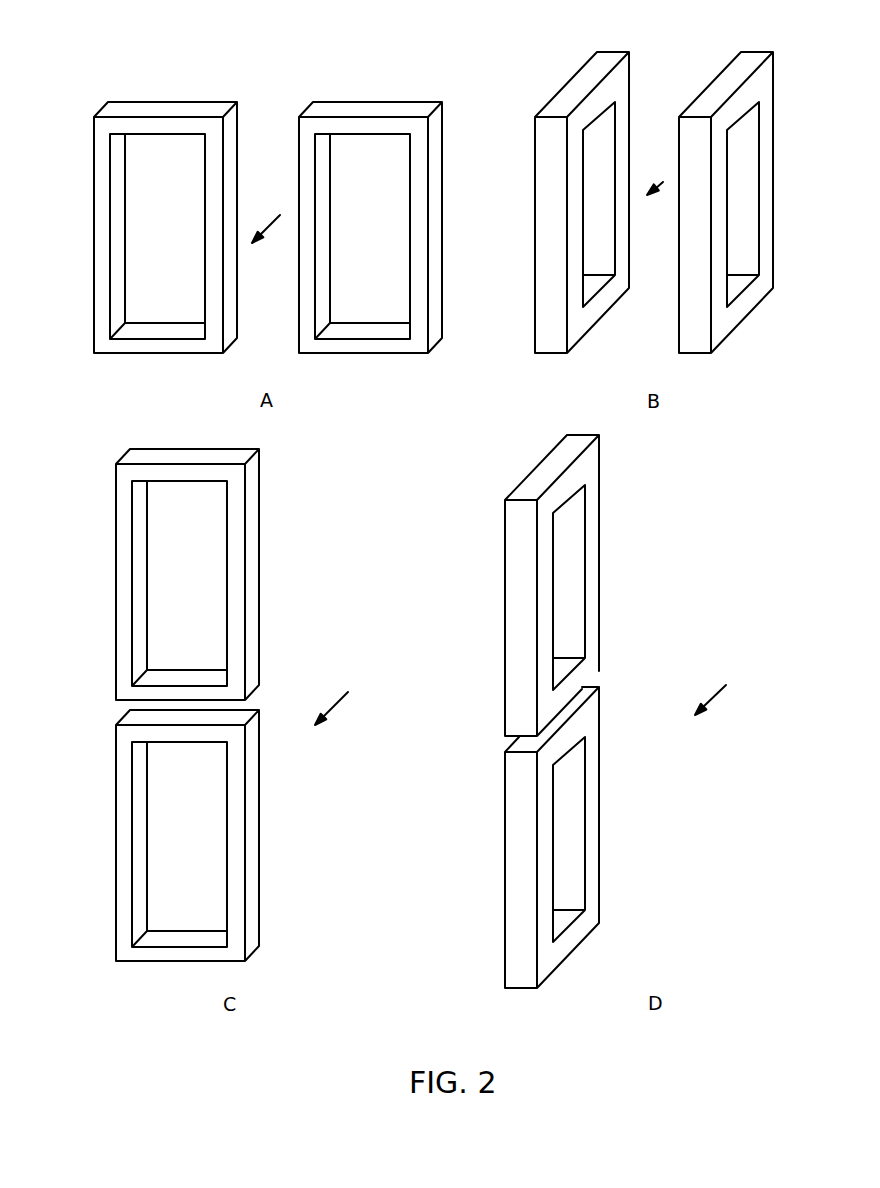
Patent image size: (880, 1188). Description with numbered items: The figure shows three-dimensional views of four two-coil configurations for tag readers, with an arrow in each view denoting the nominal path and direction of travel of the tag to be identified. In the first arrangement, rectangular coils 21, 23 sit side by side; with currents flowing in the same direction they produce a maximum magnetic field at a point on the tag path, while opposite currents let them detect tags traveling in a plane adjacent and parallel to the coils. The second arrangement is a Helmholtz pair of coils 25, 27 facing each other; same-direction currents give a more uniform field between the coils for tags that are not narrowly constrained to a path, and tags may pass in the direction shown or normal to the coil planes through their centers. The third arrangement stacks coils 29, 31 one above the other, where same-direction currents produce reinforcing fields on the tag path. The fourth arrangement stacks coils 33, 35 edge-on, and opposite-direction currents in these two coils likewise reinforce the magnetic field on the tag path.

The rectangular coil 21 is at (188, 100).
The rectangular coil 23 is at (378, 100).
The coil 25 is at (585, 70).
The coil 27 is at (710, 70).
The coil 29 is at (110, 590).
The coil 31 is at (110, 892).
The coil 33 is at (503, 590).
The coil 35 is at (503, 892).